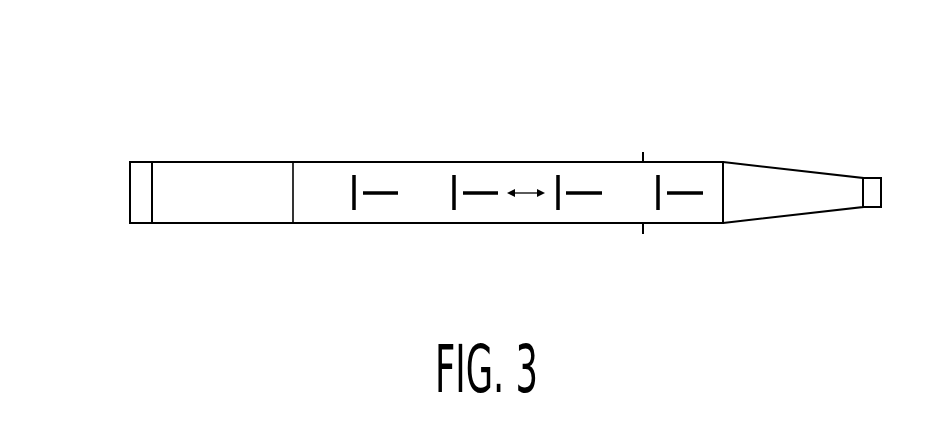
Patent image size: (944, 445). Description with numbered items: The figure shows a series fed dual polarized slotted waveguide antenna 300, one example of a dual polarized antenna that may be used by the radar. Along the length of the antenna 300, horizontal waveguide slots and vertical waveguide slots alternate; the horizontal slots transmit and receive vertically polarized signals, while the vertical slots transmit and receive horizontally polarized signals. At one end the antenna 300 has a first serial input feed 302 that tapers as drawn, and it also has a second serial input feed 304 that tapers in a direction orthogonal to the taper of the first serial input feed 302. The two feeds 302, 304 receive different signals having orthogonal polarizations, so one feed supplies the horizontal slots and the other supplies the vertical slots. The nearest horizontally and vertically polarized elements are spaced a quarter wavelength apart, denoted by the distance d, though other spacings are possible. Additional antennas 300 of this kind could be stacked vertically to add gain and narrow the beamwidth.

The series fed dual polarized slotted waveguide antenna 300 is at (114, 106).
The first serial input feed 302 is at (870, 185).
The second serial input feed 304 is at (137, 182).